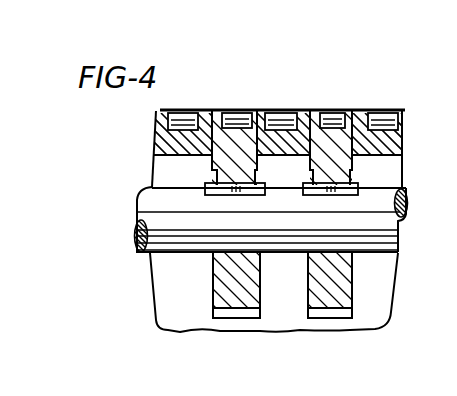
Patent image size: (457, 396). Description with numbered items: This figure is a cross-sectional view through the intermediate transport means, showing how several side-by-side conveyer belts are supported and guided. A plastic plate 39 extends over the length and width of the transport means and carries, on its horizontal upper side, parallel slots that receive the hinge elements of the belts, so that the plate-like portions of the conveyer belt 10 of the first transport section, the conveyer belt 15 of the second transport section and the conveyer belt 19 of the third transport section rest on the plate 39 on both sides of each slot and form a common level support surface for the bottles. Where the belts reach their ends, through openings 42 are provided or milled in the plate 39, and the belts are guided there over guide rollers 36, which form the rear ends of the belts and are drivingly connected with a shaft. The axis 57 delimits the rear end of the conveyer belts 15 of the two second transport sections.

The conveyer belt 19 is at (192, 106).
The conveyer belt 15 is at (242, 103).
The conveyer belt 10 is at (288, 102).
The through openings 42 is at (404, 133).
The plastic plate 39 is at (156, 141).
The axis 57 is at (167, 243).
The guide rollers 36 is at (318, 294).